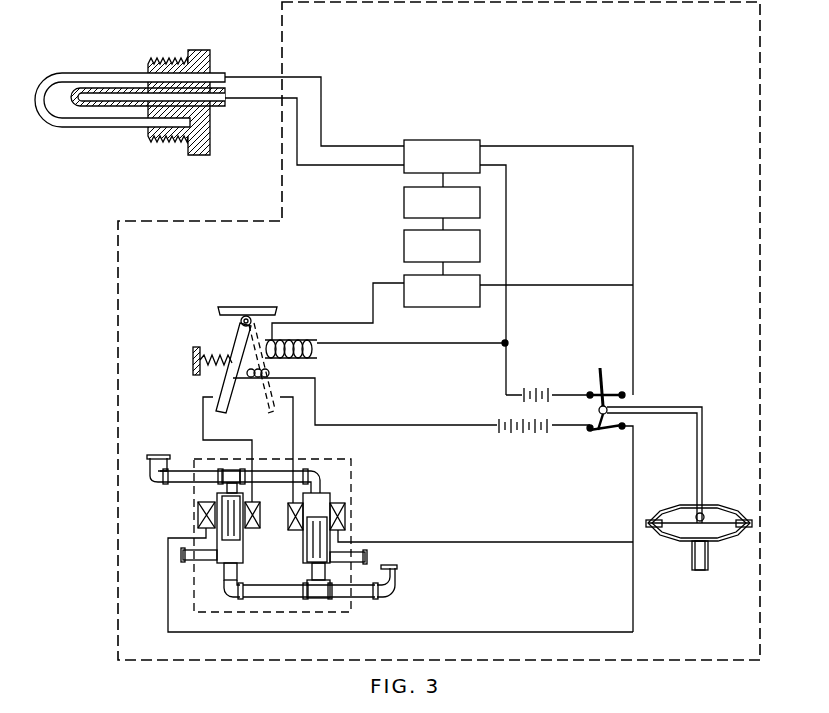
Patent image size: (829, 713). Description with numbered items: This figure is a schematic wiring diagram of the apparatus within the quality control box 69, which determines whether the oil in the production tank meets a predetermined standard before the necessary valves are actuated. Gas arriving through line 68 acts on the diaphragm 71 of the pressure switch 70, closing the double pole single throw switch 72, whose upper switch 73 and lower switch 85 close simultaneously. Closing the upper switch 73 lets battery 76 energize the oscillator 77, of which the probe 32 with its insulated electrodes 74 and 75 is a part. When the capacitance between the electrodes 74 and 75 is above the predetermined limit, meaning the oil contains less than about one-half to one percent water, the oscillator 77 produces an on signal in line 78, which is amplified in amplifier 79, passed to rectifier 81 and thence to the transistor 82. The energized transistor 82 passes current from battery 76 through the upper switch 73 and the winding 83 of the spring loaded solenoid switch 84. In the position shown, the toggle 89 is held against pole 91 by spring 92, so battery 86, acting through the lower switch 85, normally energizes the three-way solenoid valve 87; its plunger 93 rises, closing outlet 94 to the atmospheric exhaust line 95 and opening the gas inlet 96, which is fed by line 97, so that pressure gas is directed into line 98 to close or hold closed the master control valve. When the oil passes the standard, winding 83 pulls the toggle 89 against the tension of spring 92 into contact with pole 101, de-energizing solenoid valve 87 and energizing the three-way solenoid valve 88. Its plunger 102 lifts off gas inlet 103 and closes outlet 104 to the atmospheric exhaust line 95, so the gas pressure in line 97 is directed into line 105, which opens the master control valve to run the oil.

The probe 32 is at (217, 43).
The electrode 74 is at (90, 72).
The electrode 75 is at (110, 103).
The oscillator 77 is at (422, 140).
The line 78 is at (443, 181).
The amplifier 79 is at (404, 203).
The rectifier 81 is at (404, 243).
The transistor 82 is at (404, 278).
The winding 83 is at (308, 358).
The solenoid switch 84 is at (222, 337).
The toggle 89 is at (222, 388).
The spring 92 is at (215, 352).
The pole 91 is at (212, 401).
The pole 101 is at (279, 397).
The atmospheric exhaust line 95 is at (180, 452).
The outlet 94 is at (222, 490).
The outlet 104 is at (323, 490).
The plunger 93 is at (240, 530).
The plunger 102 is at (312, 552).
The 3-way solenoid valve 87 is at (198, 517).
The 3-way solenoid valve 88 is at (345, 508).
The line 98 is at (197, 560).
The line 105 is at (365, 557).
The gas inlet 96 is at (225, 568).
The gas inlet 103 is at (312, 575).
The line 97 is at (392, 590).
The battery 76 is at (528, 392).
The battery 86 is at (500, 434).
The upper switch 73 is at (606, 375).
The lower switch 85 is at (599, 433).
The double pole single throw switch 72 is at (628, 402).
The pressure switch 70 is at (711, 498).
The diaphragm 71 is at (722, 525).
The line 68 is at (708, 560).
The quality control box 69 is at (758, 93).